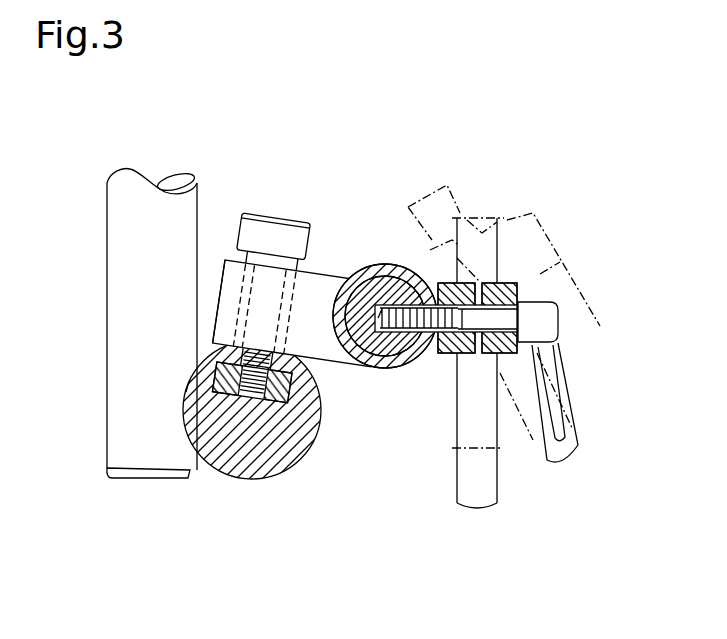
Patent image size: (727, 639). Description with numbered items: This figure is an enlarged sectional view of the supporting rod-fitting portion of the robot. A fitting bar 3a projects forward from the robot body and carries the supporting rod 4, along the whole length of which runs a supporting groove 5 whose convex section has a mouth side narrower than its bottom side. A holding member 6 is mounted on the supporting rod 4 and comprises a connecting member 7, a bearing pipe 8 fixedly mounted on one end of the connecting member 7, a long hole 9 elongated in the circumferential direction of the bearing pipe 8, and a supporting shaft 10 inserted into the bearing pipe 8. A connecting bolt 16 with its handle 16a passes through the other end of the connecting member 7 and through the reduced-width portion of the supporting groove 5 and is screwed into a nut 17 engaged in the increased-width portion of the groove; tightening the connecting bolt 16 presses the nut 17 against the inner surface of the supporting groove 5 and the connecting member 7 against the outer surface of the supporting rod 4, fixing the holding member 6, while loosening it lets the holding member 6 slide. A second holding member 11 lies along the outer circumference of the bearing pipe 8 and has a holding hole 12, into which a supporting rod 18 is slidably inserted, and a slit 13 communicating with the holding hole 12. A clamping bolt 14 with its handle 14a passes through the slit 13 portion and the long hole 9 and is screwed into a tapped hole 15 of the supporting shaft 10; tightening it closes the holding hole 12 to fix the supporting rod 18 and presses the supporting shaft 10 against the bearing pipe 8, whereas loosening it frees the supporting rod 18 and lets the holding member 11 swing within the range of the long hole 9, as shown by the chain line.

The fitting bar 3a is at (116, 233).
The supporting rod 4 is at (224, 448).
The supporting groove 5 is at (190, 388).
The holding member 6 is at (224, 254).
The connecting member 7 is at (236, 300).
The bearing pipe 8 is at (378, 264).
The long hole 9 is at (425, 268).
The supporting shaft 10 is at (357, 270).
The holding member 11 is at (440, 355).
The holding hole 12 is at (560, 355).
The slit 13 is at (482, 354).
The clamping bolt 14 is at (490, 320).
The handle 14a is at (553, 370).
The tapped hole 15 is at (373, 362).
The connecting bolt 16 is at (255, 380).
The handle 16a is at (275, 228).
The nut 17 is at (218, 375).
The supporting rod 18 is at (490, 483).